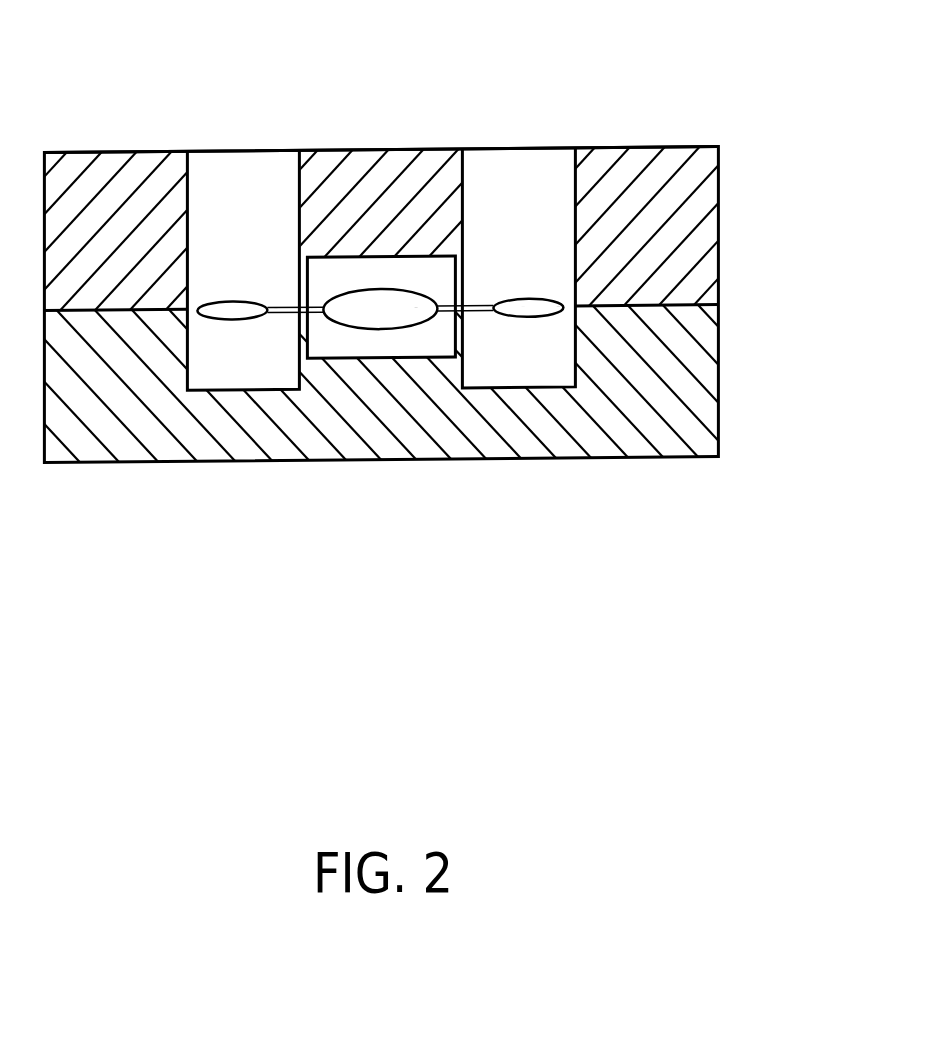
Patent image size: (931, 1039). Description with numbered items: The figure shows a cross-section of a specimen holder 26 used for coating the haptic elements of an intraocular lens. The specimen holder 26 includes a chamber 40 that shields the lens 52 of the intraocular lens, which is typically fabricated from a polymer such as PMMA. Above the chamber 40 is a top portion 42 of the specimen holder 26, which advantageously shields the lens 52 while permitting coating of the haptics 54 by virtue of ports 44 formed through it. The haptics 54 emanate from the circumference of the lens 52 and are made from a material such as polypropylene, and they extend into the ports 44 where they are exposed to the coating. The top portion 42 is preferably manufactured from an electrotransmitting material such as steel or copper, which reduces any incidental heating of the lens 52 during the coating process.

The specimen holder 26 is at (712, 112).
The chamber 40 is at (402, 348).
The top portion 42 is at (708, 237).
The ports 44 is at (552, 152).
The lens 52 is at (363, 308).
The haptics 54 is at (528, 307).